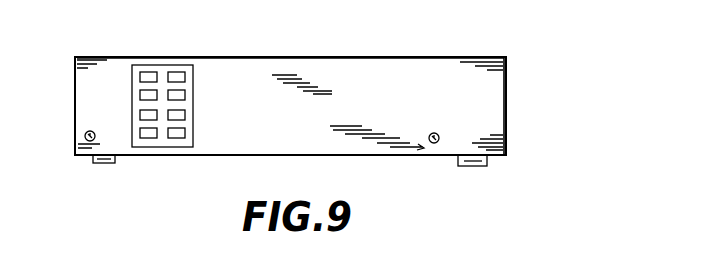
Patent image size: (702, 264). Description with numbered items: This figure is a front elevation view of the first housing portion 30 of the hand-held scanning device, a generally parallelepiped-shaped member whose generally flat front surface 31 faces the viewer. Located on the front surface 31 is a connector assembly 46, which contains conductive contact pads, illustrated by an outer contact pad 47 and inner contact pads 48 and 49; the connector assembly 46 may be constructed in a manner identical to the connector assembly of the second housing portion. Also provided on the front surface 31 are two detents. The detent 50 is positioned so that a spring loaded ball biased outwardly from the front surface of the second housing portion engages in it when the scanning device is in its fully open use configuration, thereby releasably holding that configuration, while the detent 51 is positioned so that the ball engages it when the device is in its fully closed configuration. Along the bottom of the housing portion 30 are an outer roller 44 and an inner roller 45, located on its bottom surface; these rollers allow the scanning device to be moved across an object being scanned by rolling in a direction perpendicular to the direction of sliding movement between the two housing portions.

The first housing portion 30 is at (506, 118).
The front surface 31 is at (490, 88).
The outer roller 44 is at (485, 167).
The inner roller 45 is at (102, 163).
The connector assembly 46 is at (163, 65).
The outer contact pad 47 is at (140, 96).
The inner contact pad 48 is at (185, 95).
The inner contact pad 49 is at (186, 114).
The detent 50 is at (85, 141).
The detent 51 is at (432, 143).